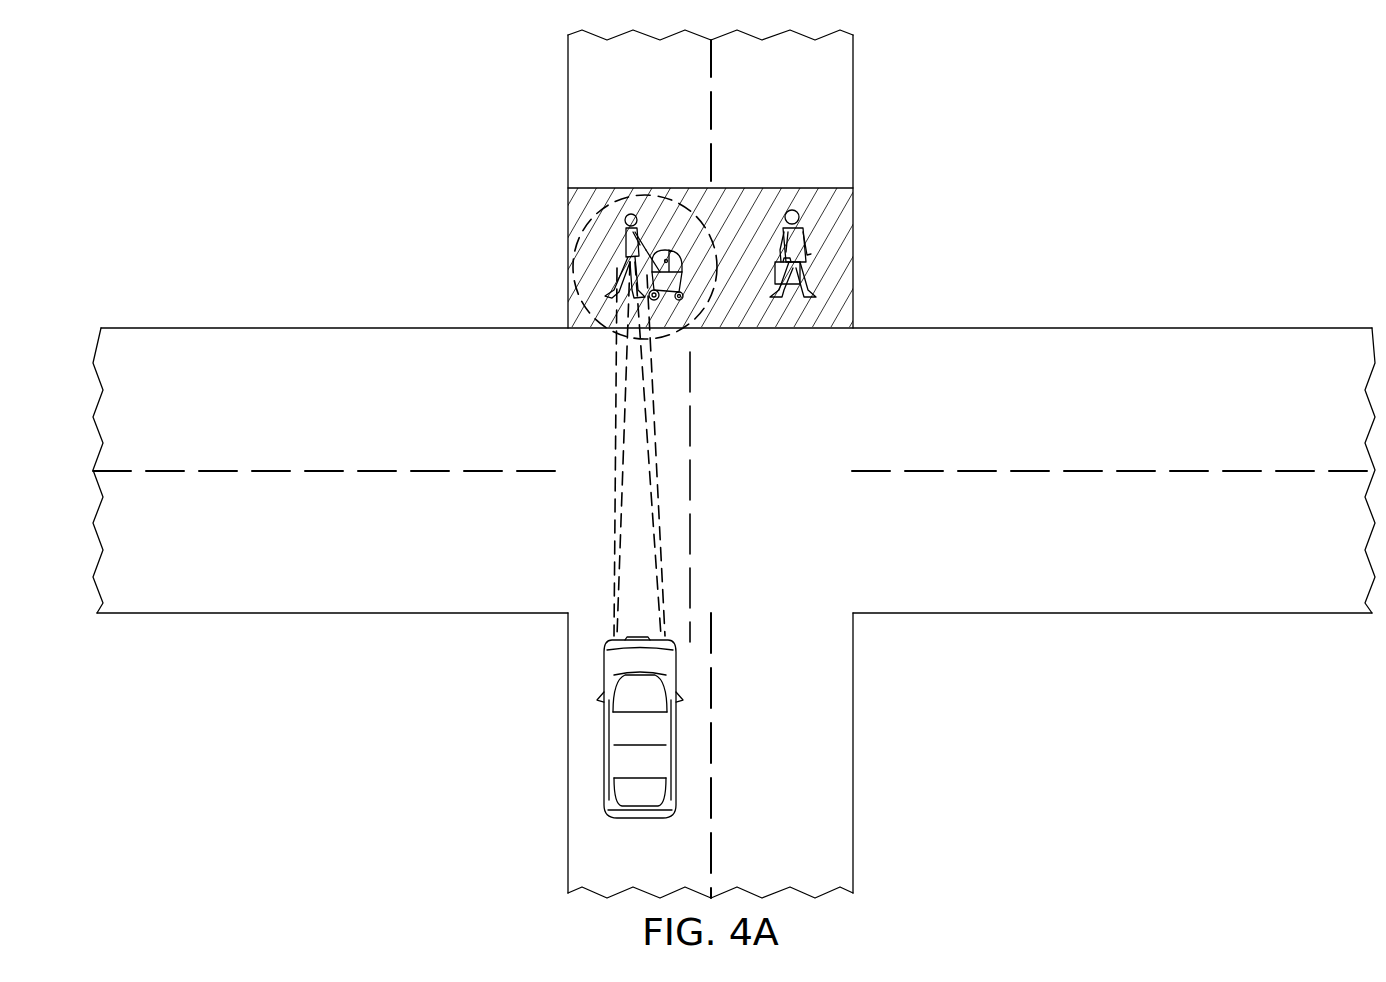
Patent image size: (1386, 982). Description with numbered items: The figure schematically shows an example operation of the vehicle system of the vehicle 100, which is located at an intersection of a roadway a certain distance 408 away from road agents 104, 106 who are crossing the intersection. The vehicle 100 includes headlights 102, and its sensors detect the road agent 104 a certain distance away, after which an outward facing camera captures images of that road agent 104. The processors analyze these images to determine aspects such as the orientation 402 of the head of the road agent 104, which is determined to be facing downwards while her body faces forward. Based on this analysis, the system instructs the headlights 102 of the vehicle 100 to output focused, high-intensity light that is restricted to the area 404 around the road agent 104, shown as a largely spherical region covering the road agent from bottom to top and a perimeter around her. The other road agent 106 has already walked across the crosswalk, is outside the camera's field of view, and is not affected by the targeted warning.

The vehicle 100 is at (599, 757).
The headlights 102 is at (608, 651).
The road agent 104 is at (598, 225).
The road agent 106 is at (807, 245).
The orientation of the head 402 is at (633, 213).
The area 404 is at (573, 267).
The distance 408 is at (691, 415).